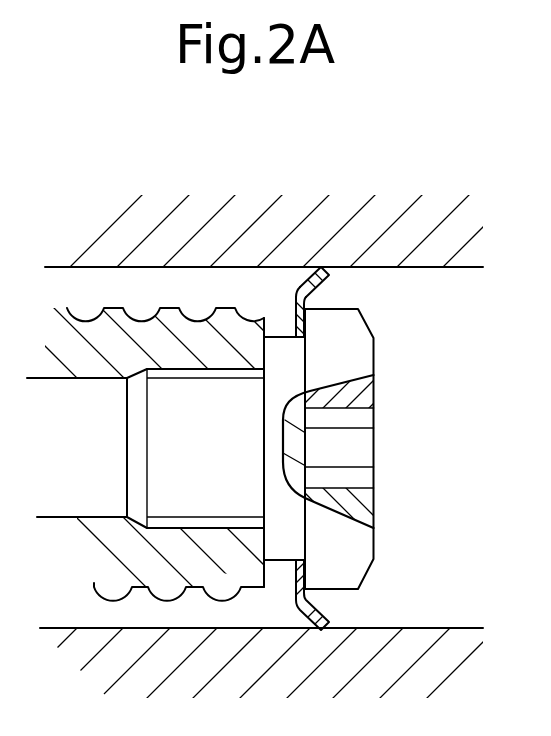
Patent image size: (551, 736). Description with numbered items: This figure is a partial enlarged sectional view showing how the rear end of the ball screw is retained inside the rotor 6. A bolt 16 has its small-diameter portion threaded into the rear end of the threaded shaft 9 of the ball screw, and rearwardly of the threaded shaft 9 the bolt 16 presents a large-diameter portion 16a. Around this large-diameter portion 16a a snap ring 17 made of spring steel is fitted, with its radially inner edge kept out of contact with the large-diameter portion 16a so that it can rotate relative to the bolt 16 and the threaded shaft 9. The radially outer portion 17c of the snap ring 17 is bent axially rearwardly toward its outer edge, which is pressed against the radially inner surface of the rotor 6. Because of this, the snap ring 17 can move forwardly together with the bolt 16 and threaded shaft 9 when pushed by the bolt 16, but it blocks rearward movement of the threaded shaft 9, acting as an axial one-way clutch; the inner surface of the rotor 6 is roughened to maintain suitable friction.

The rotor 6 is at (433, 250).
The threaded shaft 9 is at (105, 347).
The bolt 16 is at (340, 347).
The large-diameter portion 16a is at (285, 333).
The snap ring 17 is at (303, 281).
The radially outer portion 17c is at (310, 266).